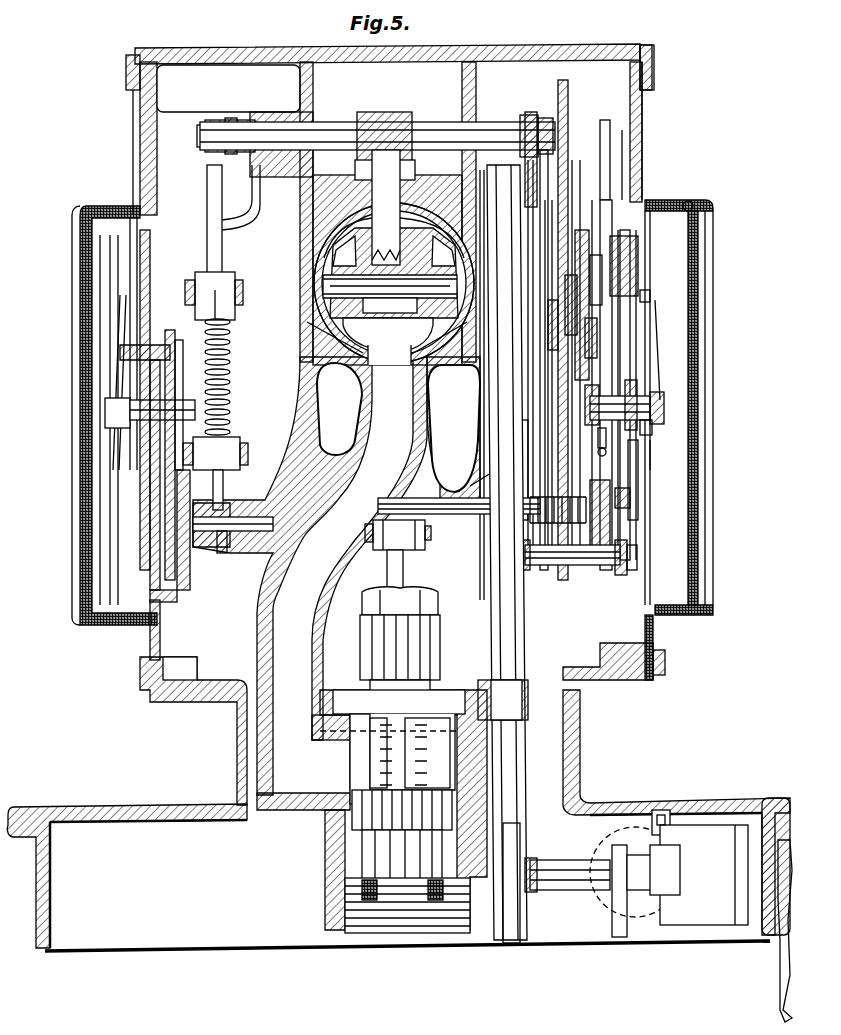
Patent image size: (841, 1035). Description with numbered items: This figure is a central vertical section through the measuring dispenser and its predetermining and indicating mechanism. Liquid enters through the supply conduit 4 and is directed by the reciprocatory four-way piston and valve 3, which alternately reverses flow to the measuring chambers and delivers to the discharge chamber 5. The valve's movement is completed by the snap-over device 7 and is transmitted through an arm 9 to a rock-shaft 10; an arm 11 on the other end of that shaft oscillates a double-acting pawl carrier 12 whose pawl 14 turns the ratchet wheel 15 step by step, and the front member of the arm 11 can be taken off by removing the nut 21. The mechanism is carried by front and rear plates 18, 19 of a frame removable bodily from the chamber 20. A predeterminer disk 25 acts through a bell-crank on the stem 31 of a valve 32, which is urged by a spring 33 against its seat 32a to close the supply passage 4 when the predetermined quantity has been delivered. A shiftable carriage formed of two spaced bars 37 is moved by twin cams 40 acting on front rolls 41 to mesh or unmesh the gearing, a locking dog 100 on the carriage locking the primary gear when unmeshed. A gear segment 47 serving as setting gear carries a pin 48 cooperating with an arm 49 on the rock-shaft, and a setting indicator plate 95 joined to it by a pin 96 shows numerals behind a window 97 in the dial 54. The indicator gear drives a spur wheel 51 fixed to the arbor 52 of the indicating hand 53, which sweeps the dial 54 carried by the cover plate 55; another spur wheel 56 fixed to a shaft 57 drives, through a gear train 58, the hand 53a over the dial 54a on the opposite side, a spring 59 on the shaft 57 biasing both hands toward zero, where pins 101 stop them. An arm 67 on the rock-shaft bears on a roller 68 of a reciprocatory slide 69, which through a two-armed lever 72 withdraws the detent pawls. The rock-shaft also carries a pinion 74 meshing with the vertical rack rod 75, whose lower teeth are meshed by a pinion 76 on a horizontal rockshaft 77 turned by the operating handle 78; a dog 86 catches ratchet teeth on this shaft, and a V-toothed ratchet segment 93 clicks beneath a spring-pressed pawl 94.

The reciprocatory four-way piston and valve 3 is at (318, 325).
The supply conduit 4 is at (560, 75).
The discharge chamber 5 is at (444, 404).
The snap-over device 7 is at (232, 330).
The arm 9 is at (400, 185).
The rock-shaft 10 is at (332, 128).
The arm 11 is at (542, 110).
The double-acting pawl carrier 12 is at (540, 250).
The pawl 14 is at (575, 235).
The ratchet wheel 15 is at (485, 475).
The front plate 18 is at (621, 577).
The rear plate 19 is at (529, 572).
The chamber 20 is at (625, 622).
The nut 21 is at (612, 80).
The predeterminer disk 25 is at (543, 470).
The stem 31 is at (410, 567).
The valve 32 is at (455, 880).
The seat 32a is at (365, 828).
The spring 33 is at (375, 762).
The carriage plates or bars 37 is at (585, 330).
The twin cams 40 is at (640, 244).
The front rolls 41 is at (590, 292).
The gear segment 47 is at (562, 100).
The pin 48 is at (655, 370).
The arm 49 is at (600, 272).
The spur wheel 51 is at (645, 478).
The arbor 52 is at (640, 430).
The indicating hand 53 is at (640, 350).
The indicator hand 53a is at (118, 345).
The dial 54 is at (640, 232).
The dial 54a is at (130, 252).
The cover plate 55 is at (645, 108).
The spur wheel 56 is at (592, 562).
The shaft 57 is at (463, 516).
The gear train 58 is at (175, 490).
The spring 59 is at (558, 491).
The arm 67 is at (640, 306).
The roller 68 is at (587, 432).
The reciprocatory slide 69 is at (590, 459).
The two-armed lever 72 is at (652, 455).
The pinion 74 is at (392, 396).
The rod 75 is at (492, 615).
The pinion 76 is at (530, 925).
The horizontal rockshaft 77 is at (563, 872).
The operating handle 78 is at (770, 972).
The dog 86 is at (680, 808).
The ratchet wheel or segment 93 is at (613, 915).
The spring-pressed pawl 94 is at (612, 858).
The setting indicator plate 95 is at (635, 140).
The pin 96 is at (625, 178).
The window 97 is at (718, 350).
The locking dog or tooth 100 is at (600, 310).
The pins 101 is at (130, 295).